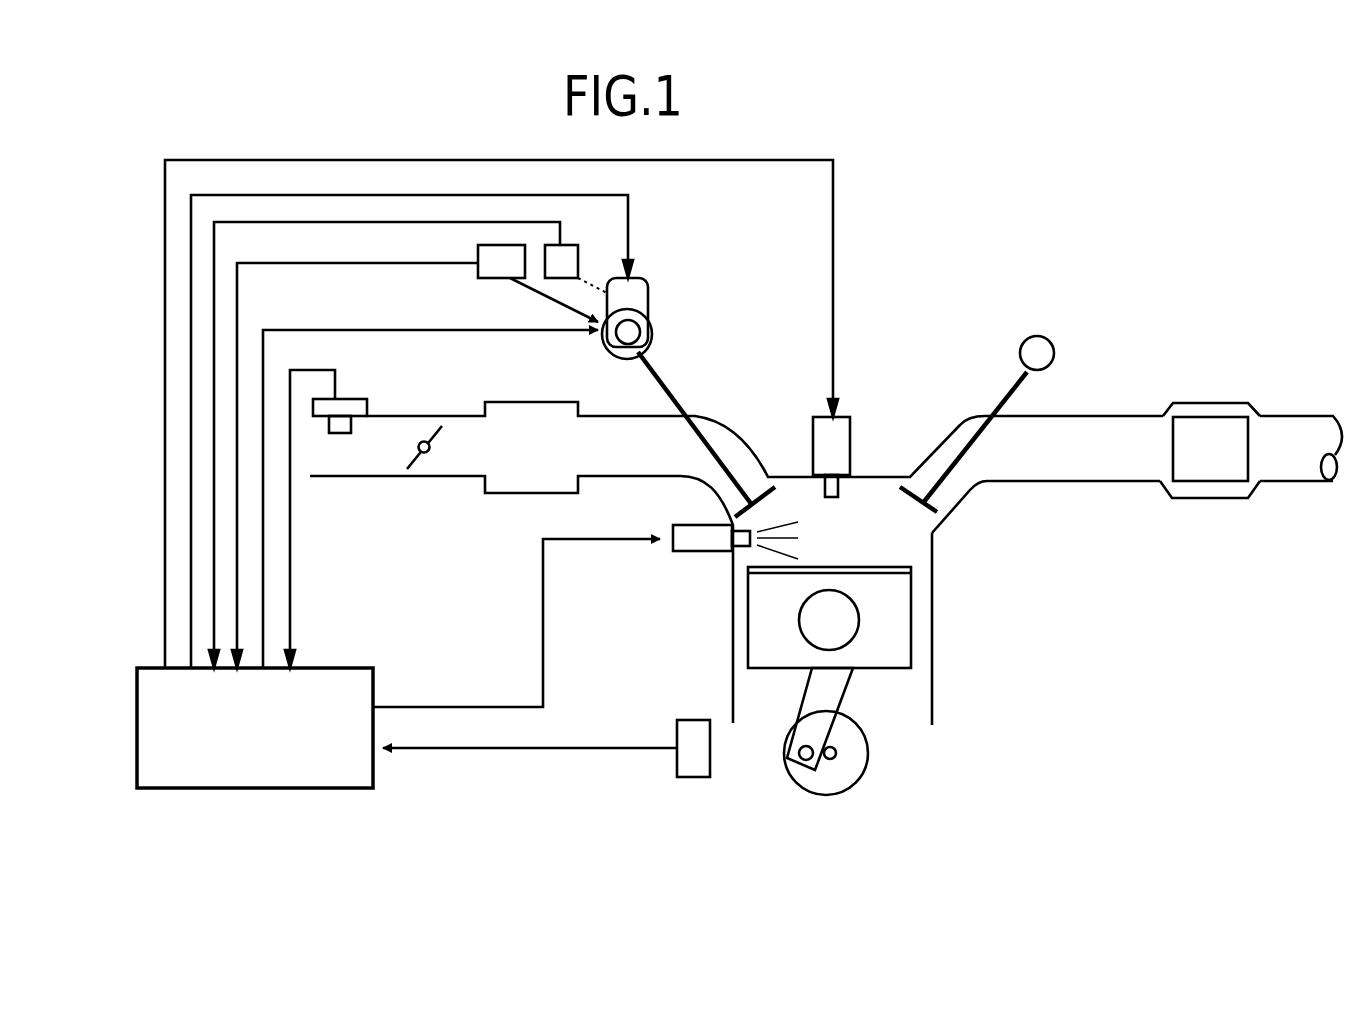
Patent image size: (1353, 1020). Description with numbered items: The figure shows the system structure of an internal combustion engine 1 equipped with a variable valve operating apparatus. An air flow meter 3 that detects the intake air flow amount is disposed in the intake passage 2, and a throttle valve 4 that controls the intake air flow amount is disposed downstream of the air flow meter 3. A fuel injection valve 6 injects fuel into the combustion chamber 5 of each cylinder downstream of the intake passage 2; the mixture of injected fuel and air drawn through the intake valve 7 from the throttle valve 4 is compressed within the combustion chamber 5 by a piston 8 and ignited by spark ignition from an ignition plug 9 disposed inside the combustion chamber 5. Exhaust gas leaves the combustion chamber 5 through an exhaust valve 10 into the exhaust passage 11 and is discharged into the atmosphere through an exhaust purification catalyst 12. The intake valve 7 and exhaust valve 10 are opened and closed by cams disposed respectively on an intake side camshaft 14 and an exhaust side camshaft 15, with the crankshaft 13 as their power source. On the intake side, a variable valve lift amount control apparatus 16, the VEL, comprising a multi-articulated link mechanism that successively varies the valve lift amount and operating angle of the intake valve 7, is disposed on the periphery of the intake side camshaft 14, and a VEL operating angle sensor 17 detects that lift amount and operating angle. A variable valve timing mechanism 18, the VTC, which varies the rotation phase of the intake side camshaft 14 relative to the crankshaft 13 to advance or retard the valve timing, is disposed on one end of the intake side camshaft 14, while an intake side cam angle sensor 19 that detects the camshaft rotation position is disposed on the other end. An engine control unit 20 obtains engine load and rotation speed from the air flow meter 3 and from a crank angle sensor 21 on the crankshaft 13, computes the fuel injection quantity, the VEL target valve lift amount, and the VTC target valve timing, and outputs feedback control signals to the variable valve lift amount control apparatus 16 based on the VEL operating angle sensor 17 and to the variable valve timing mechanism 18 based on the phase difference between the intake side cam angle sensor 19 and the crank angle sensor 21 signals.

The internal combustion engine 1 is at (932, 703).
The intake passage 2 is at (613, 435).
The air flow meter 3 is at (350, 399).
The throttle valve 4 is at (442, 416).
The combustion chamber 5 is at (892, 547).
The fuel injection valve 6 is at (697, 551).
The intake valve 7 is at (732, 468).
The piston 8 is at (912, 622).
The ignition plug 9 is at (850, 435).
The exhaust valve 10 is at (997, 398).
The exhaust passage 11 is at (1083, 460).
The exhaust purification catalyst 12 is at (1202, 467).
The crankshaft 13 is at (838, 753).
The intake side camshaft 14 is at (633, 322).
The exhaust side camshaft 15 is at (1035, 336).
The variable valve lift amount control apparatus 16 is at (638, 278).
The VEL operating angle sensor 17 is at (578, 262).
The variable valve timing mechanism 18 is at (655, 333).
The intake side cam angle sensor 19 is at (483, 278).
The engine control unit 20 is at (217, 788).
The crank angle sensor 21 is at (690, 780).